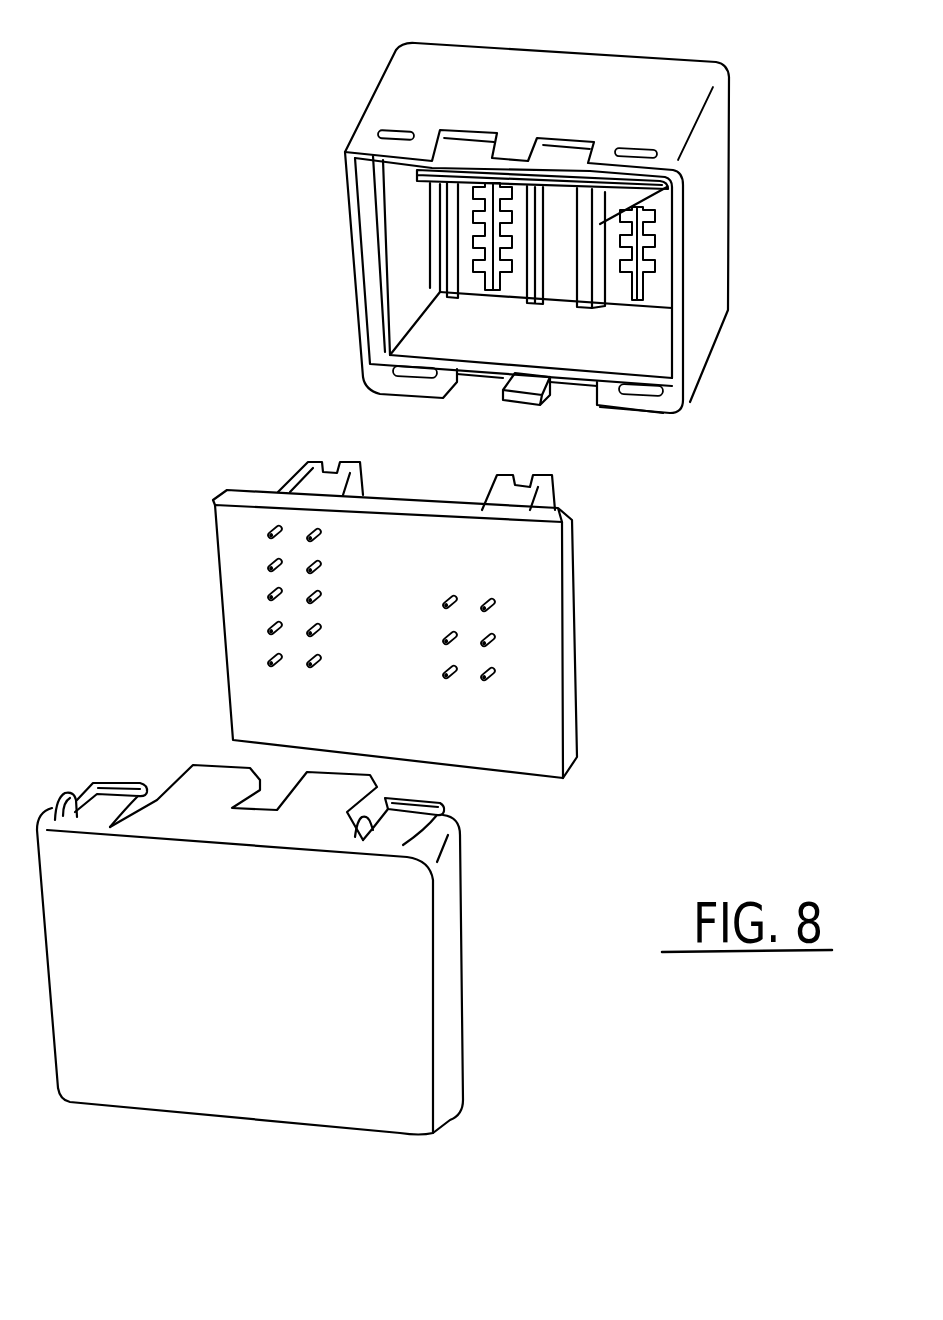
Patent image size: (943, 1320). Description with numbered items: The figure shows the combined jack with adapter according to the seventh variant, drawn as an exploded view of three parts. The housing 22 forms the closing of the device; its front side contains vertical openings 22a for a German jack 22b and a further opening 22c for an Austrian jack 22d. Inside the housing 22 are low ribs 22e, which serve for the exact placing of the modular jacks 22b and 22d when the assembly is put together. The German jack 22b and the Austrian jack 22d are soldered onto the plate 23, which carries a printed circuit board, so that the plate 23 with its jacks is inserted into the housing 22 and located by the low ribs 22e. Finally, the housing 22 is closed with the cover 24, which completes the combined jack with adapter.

The housing 22 is at (703, 315).
The vertical openings 22a is at (480, 247).
The German jack 22b is at (307, 483).
The opening 22c is at (660, 243).
The Austrian jack 22d is at (538, 492).
The low ribs 22e is at (677, 181).
The plate with printed circuit board 23 is at (543, 650).
The cover 24 is at (443, 983).